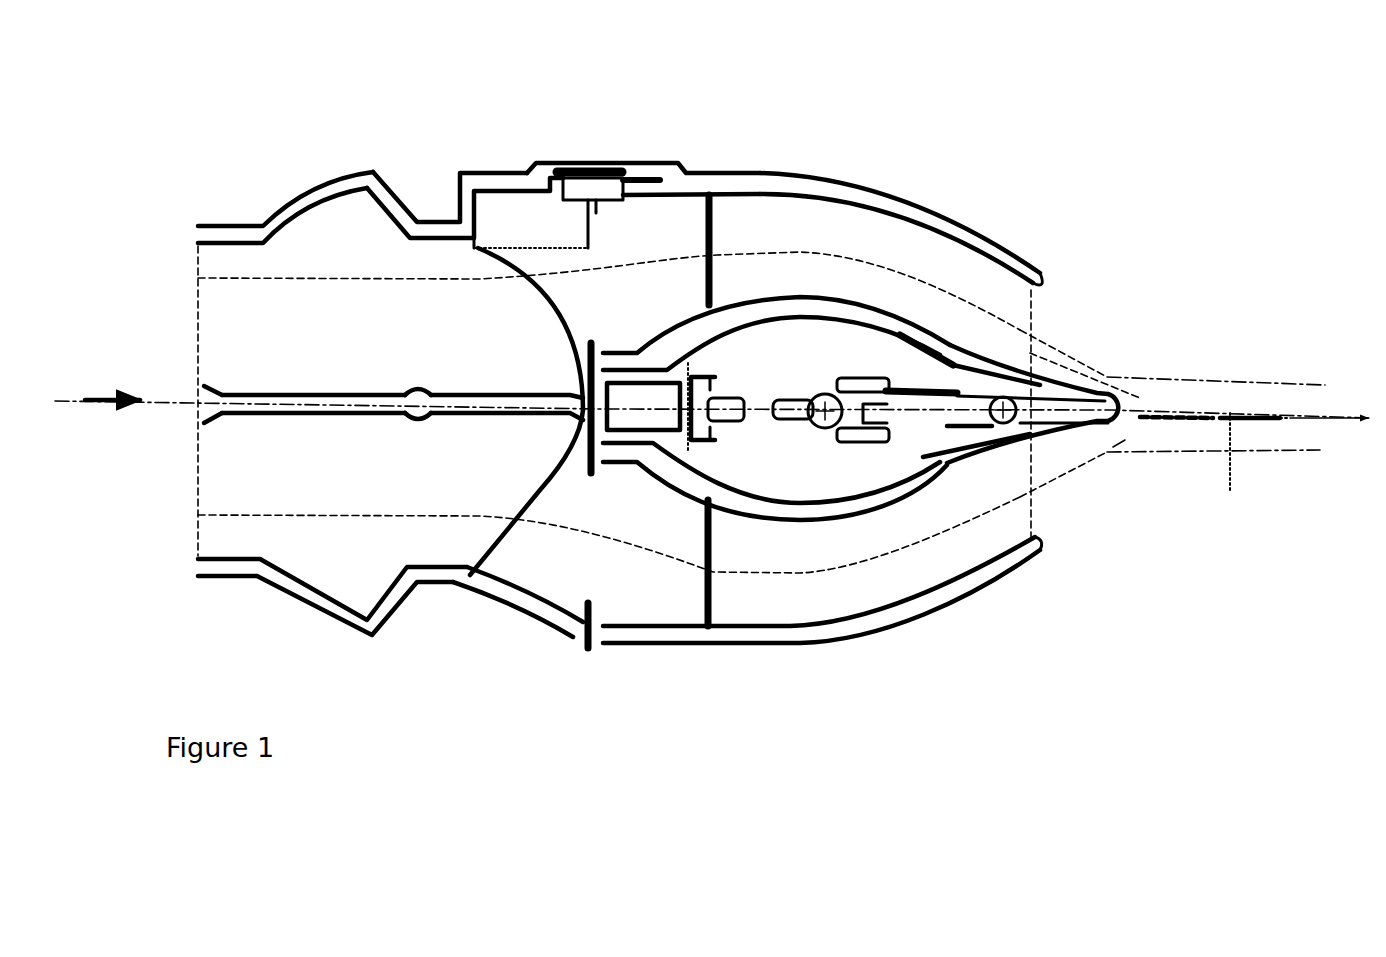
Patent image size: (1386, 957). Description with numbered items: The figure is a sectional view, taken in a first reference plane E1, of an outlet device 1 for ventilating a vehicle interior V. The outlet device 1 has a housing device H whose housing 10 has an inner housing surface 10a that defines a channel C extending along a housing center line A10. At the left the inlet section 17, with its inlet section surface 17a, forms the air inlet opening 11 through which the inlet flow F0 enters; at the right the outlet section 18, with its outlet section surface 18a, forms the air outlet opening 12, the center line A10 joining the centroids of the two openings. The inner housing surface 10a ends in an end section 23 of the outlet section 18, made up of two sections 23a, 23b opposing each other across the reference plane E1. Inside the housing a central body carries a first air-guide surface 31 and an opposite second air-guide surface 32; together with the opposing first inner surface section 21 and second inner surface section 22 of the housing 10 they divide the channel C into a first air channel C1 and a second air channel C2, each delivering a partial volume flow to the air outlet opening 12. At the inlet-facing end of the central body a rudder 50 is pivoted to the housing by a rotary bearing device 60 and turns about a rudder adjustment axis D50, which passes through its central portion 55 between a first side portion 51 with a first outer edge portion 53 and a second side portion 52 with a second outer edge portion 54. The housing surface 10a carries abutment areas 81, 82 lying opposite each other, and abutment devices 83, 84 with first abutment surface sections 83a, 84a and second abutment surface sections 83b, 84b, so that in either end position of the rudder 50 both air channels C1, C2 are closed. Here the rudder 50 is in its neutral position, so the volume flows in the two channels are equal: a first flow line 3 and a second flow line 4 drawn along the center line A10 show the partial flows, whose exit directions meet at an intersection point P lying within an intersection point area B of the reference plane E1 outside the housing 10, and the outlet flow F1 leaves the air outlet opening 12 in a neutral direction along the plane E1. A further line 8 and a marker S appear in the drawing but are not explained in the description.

The outlet device 1 is at (421, 100).
The housing 10 is at (747, 163).
The inner housing surface 10a is at (753, 200).
The air inlet opening 11 is at (197, 268).
The air outlet opening 12 is at (1042, 300).
The inlet section 17 is at (223, 258).
The inlet section surface 17a is at (245, 247).
The outlet section 18 is at (933, 203).
The outlet section surface 18a is at (871, 213).
The first inner surface section 21 is at (843, 620).
The second inner surface section 22 is at (827, 200).
The end section 23 is at (1042, 320).
The end section portion 23a is at (609, 535).
The end section portion 23b is at (1000, 408).
The first flow line 3 is at (1253, 453).
The second flow line 4 is at (1262, 380).
The nozzle axis line 8 is at (1110, 377).
The first air-guide surface 31 is at (806, 513).
The second air-guide surface 32 is at (803, 300).
The rudder 50 is at (312, 372).
The first side portion 51 is at (228, 426).
The second side portion 52 is at (570, 445).
The first outer edge portion 53 is at (200, 395).
The second outer edge portion 54 is at (575, 385).
The central portion 55 is at (400, 433).
The rotary bearing device 60 is at (440, 385).
The abutment area 81 is at (463, 537).
The abutment area 82 is at (464, 254).
The abutment device 83 is at (422, 550).
The first abutment surface section 83a is at (390, 573).
The second abutment surface section 83b is at (520, 599).
The abutment device 84 is at (428, 258).
The first abutment surface section 84a is at (393, 233).
The second abutment surface section 84b is at (466, 254).
The housing center line A10 is at (1137, 403).
The intersection point area B is at (1250, 466).
The channel C is at (244, 308).
The first air channel C1 is at (925, 576).
The second air channel C2 is at (930, 260).
The rudder adjustment axis D50 is at (425, 383).
The first reference plane E1 is at (1293, 422).
The inlet flow F0 is at (112, 405).
The outlet flow F1 is at (1357, 423).
The housing device H is at (567, 147).
The intersection point P is at (1167, 417).
The section S is at (1113, 447).
The vehicle interior V is at (1172, 228).